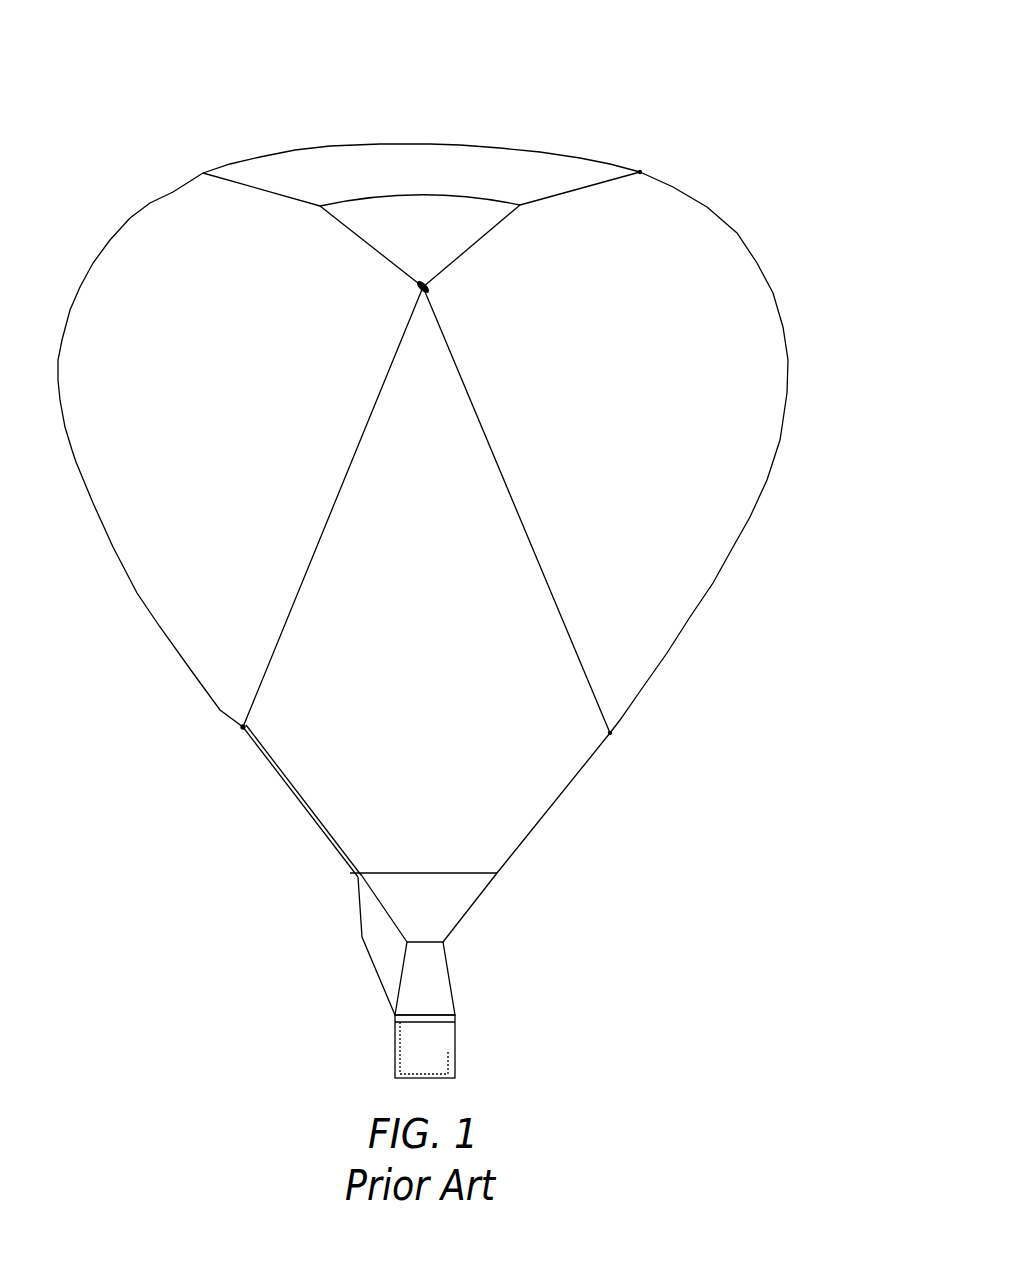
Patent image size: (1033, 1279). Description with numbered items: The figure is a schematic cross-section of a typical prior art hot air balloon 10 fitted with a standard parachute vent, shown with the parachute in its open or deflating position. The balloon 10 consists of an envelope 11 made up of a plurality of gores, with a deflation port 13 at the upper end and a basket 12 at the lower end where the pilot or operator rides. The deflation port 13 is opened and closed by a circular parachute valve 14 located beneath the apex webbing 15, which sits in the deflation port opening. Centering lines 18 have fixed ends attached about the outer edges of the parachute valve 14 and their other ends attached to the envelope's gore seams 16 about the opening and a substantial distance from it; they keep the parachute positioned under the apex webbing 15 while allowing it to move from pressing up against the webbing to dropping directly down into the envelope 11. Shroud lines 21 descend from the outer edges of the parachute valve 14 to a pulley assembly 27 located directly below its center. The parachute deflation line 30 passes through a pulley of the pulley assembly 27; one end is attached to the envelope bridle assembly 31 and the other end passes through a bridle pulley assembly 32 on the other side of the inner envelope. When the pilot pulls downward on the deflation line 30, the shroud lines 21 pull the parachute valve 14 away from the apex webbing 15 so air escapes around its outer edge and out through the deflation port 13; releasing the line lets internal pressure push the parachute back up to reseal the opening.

The hot air balloon 10 is at (688, 82).
The envelope 11 is at (713, 583).
The basket 12 is at (458, 1052).
The deflation port 13 is at (357, 115).
The parachute valve 14 is at (360, 195).
The apex webbing 15 is at (461, 145).
The gore seams 16 is at (640, 172).
The centering lines 18 is at (562, 195).
The shroud lines 21 is at (463, 253).
The pulley assembly 27 is at (433, 310).
The parachute deflation line 30 is at (348, 462).
The envelope bridle assembly 31 is at (607, 733).
The bridle pulley assembly 32 is at (247, 727).